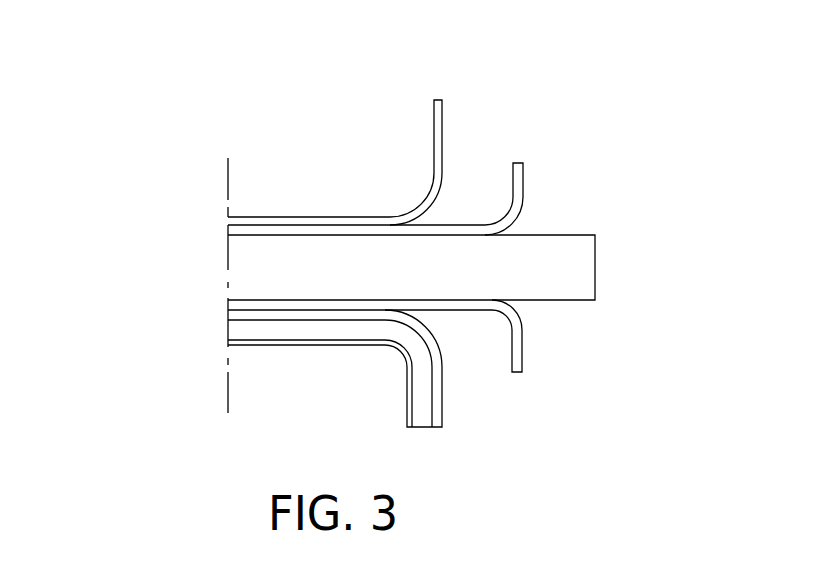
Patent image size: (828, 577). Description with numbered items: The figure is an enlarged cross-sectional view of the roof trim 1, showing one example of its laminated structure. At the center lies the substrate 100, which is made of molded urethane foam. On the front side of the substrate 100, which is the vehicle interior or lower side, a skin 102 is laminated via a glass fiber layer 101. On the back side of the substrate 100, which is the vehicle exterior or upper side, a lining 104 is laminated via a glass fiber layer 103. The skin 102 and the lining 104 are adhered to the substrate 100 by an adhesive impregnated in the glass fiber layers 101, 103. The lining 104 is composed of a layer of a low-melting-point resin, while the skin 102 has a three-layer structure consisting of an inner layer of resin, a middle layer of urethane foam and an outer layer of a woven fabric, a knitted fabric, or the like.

The roof trim 1 is at (297, 168).
The substrate 100 is at (565, 258).
The glass fiber layer 101 is at (523, 357).
The skin 102 is at (443, 408).
The glass fiber layer 103 is at (522, 172).
The lining 104 is at (442, 120).